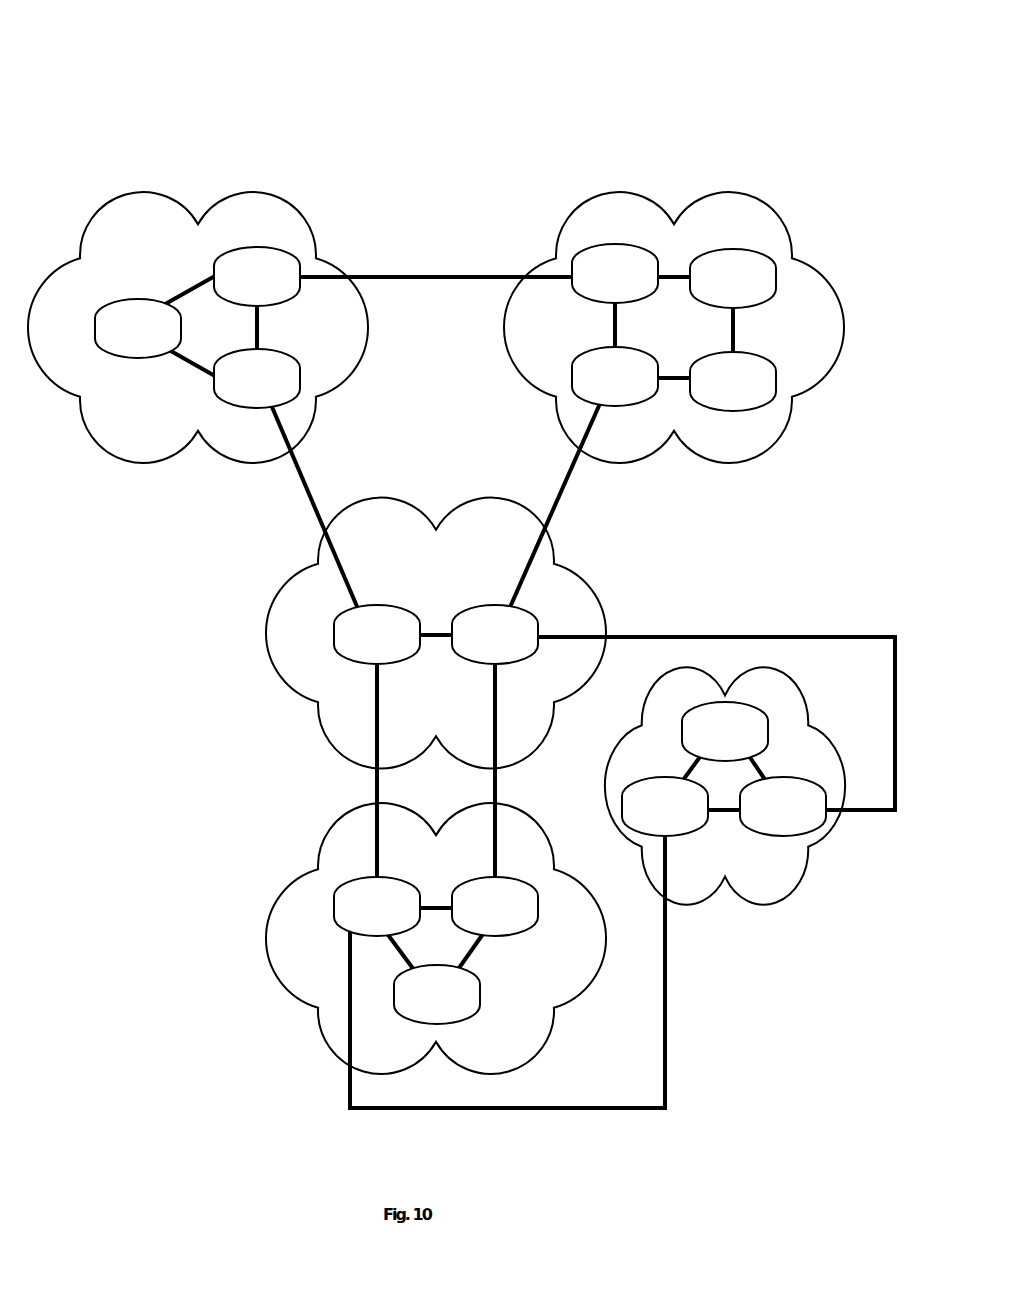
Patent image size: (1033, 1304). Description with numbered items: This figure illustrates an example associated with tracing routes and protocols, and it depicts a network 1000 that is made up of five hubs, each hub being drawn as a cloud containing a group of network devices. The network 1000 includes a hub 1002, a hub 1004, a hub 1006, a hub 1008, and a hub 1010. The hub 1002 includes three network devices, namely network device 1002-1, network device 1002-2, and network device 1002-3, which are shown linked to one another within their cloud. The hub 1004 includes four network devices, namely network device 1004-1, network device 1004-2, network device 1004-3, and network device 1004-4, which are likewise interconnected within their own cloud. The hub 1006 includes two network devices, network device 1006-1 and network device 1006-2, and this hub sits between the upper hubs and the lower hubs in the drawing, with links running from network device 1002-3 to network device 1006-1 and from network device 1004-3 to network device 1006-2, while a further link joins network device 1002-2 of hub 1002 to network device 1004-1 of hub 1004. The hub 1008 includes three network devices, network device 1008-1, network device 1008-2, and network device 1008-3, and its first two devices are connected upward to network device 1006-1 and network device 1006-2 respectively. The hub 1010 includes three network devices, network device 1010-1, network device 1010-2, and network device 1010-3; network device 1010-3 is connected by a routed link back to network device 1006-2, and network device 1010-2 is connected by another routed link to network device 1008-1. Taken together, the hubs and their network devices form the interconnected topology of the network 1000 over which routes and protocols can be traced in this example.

The network 1000 is at (436, 66).
The hub 1002 is at (146, 192).
The network device 1002-1 is at (110, 327).
The network device 1002-2 is at (229, 275).
The network device 1002-3 is at (229, 377).
The hub 1004 is at (723, 192).
The network device 1004-1 is at (587, 272).
The network device 1004-2 is at (705, 277).
The network device 1004-3 is at (587, 375).
The network device 1004-4 is at (705, 380).
The hub 1006 is at (266, 637).
The network device 1006-1 is at (349, 633).
The network device 1006-2 is at (467, 633).
The hub 1008 is at (266, 938).
The network device 1008-1 is at (349, 905).
The network device 1008-2 is at (467, 905).
The network device 1008-3 is at (409, 993).
The hub 1010 is at (758, 905).
The network device 1010-1 is at (697, 730).
The network device 1010-2 is at (637, 805).
The network device 1010-3 is at (755, 805).